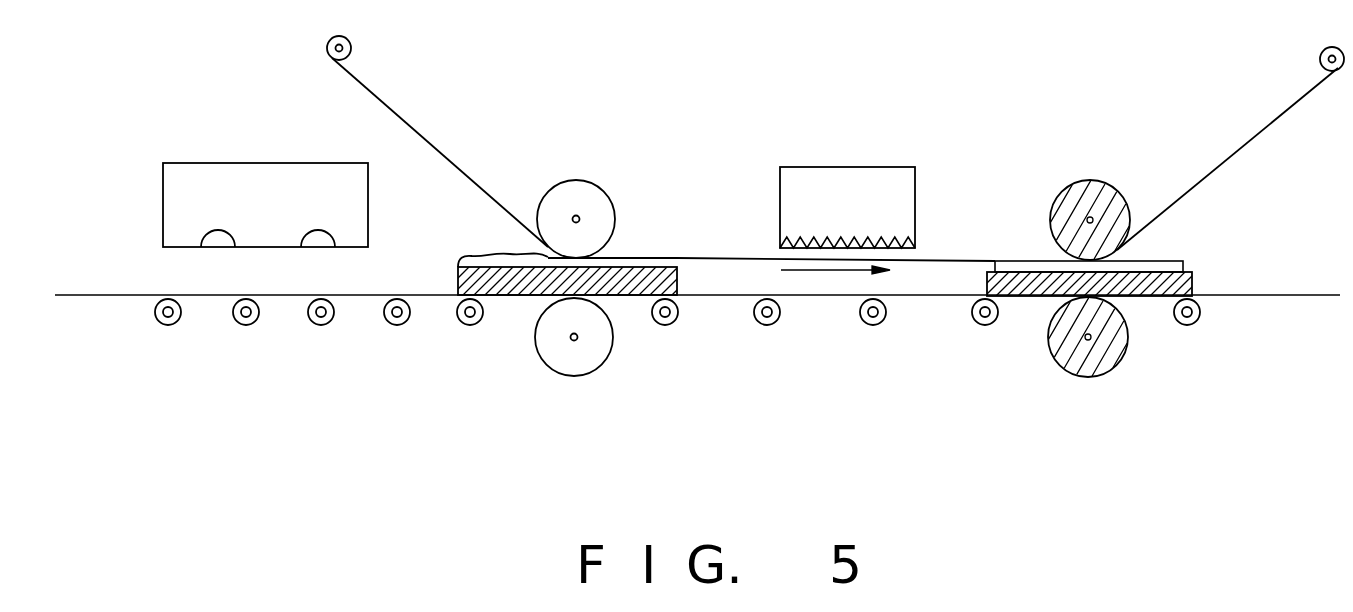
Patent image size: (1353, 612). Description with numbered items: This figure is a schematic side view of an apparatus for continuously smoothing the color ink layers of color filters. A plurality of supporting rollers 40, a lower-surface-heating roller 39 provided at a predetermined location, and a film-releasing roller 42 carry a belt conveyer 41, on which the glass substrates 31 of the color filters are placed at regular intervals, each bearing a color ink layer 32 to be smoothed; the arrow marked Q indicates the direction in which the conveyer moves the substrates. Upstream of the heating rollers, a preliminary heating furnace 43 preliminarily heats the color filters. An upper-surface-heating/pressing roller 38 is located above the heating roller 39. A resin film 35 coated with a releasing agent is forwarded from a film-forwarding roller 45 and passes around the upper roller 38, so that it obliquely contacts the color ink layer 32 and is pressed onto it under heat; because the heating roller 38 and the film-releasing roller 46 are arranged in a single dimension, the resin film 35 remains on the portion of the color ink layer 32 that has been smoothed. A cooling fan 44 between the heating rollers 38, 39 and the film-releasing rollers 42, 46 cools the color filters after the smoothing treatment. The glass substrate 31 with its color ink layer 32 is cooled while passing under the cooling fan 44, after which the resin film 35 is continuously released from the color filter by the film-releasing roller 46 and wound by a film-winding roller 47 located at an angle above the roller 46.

The glass substrate 31 is at (622, 288).
The color ink layer 32 is at (472, 250).
The resin film 35 is at (450, 157).
The upper-surface-heating/pressing roller 38 is at (613, 210).
The lower-surface-heating roller 39 is at (587, 373).
The supporting rollers 40 is at (248, 325).
The belt conveyer 41 is at (803, 298).
The film-releasing roller 42 is at (1100, 376).
The preliminary heating furnace 43 is at (270, 163).
The cooling fan 44 is at (862, 166).
The film-forwarding roller 45 is at (352, 46).
The film-releasing roller 46 is at (1087, 183).
The film-winding roller 47 is at (1320, 53).
The conveying direction Q is at (842, 272).